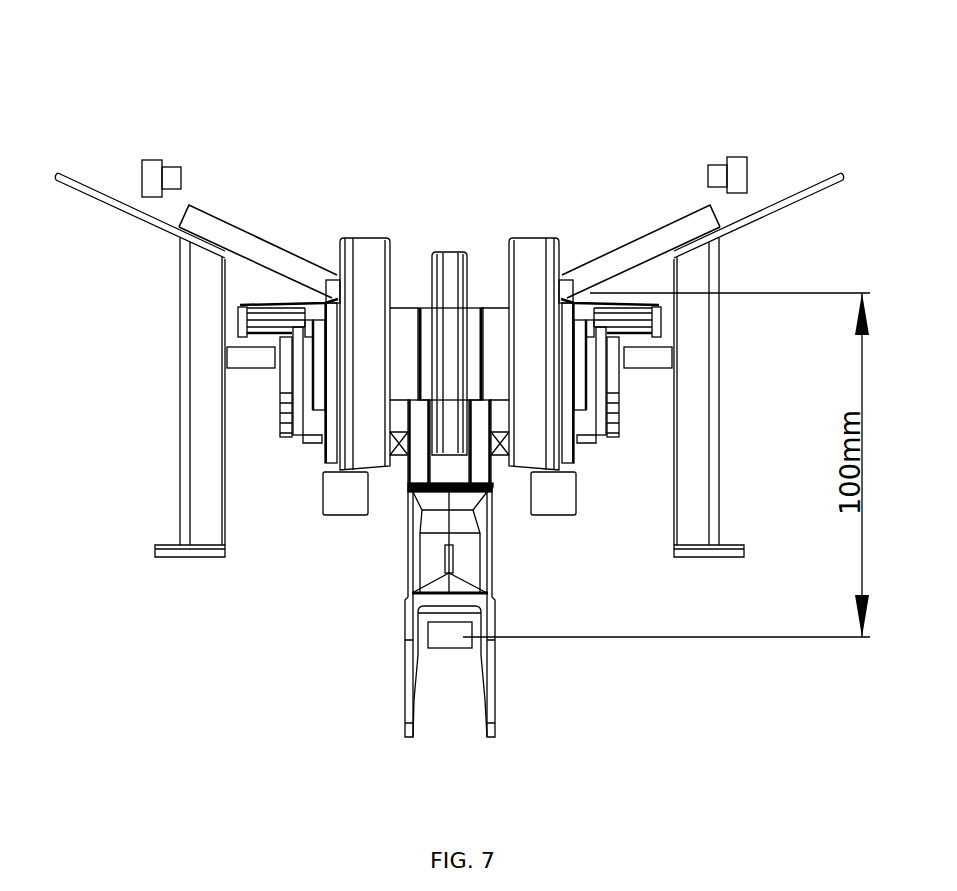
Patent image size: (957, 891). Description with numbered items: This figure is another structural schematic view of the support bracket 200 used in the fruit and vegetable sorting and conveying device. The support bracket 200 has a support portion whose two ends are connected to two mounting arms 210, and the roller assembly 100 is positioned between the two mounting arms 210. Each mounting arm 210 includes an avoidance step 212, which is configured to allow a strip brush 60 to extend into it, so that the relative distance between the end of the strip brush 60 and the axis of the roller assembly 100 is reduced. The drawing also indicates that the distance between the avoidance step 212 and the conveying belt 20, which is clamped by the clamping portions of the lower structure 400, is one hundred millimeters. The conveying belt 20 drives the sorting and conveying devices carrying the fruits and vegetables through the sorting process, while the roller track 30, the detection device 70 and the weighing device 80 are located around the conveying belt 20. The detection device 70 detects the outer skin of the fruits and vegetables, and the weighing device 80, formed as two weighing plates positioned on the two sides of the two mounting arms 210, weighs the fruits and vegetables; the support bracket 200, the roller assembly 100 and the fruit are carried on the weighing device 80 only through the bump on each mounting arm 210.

The roller assembly 100 is at (452, 238).
The support bracket 200 is at (245, 305).
The mounting arm 210 is at (277, 310).
The avoidance step 212 is at (323, 273).
The strip brush 60 is at (618, 262).
The detection device 70 is at (745, 157).
The weighing device 80 is at (250, 368).
The roller track 30 is at (347, 503).
The lower frame 400 is at (410, 575).
The conveying belt 20 is at (450, 633).